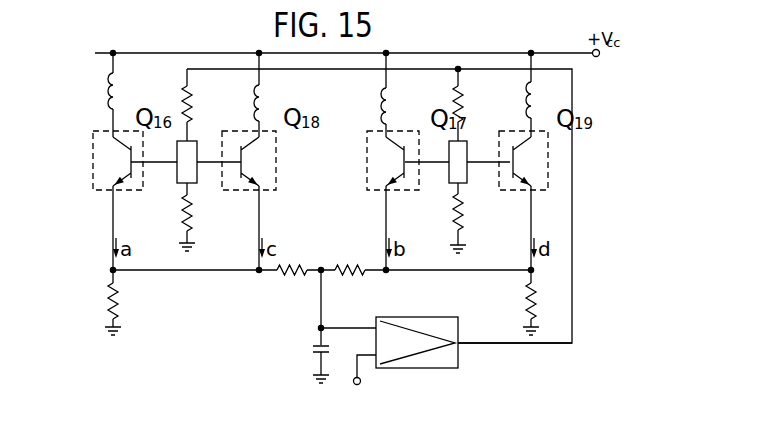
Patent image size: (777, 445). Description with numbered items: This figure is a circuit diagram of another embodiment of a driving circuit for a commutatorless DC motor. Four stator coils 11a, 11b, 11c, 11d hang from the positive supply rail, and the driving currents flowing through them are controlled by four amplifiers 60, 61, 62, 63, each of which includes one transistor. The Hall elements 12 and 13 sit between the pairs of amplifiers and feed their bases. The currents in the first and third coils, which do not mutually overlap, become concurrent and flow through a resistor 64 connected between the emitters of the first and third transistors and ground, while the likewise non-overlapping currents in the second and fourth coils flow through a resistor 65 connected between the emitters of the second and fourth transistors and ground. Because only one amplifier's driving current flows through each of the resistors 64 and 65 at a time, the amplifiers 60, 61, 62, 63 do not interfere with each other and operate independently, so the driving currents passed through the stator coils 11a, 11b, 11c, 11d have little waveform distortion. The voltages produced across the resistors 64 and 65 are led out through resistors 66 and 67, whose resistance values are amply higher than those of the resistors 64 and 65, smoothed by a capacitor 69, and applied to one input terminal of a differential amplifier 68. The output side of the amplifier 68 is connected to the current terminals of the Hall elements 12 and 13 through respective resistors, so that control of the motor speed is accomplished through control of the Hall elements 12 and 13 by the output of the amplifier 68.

The stator coil 11a is at (119, 101).
The stator coil 11b is at (393, 101).
The stator coil 11c is at (265, 102).
The stator coil 11d is at (512, 85).
The Hall element 12 is at (177, 179).
The Hall element 13 is at (451, 181).
The amplifier 60 is at (135, 191).
The amplifier 61 is at (378, 193).
The amplifier 62 is at (220, 192).
The amplifier 63 is at (500, 193).
The resistor 64 is at (118, 300).
The resistor 65 is at (526, 298).
The resistor 66 is at (287, 276).
The resistor 67 is at (365, 275).
The differential amplifier 68 is at (411, 316).
The capacitor 69 is at (313, 346).